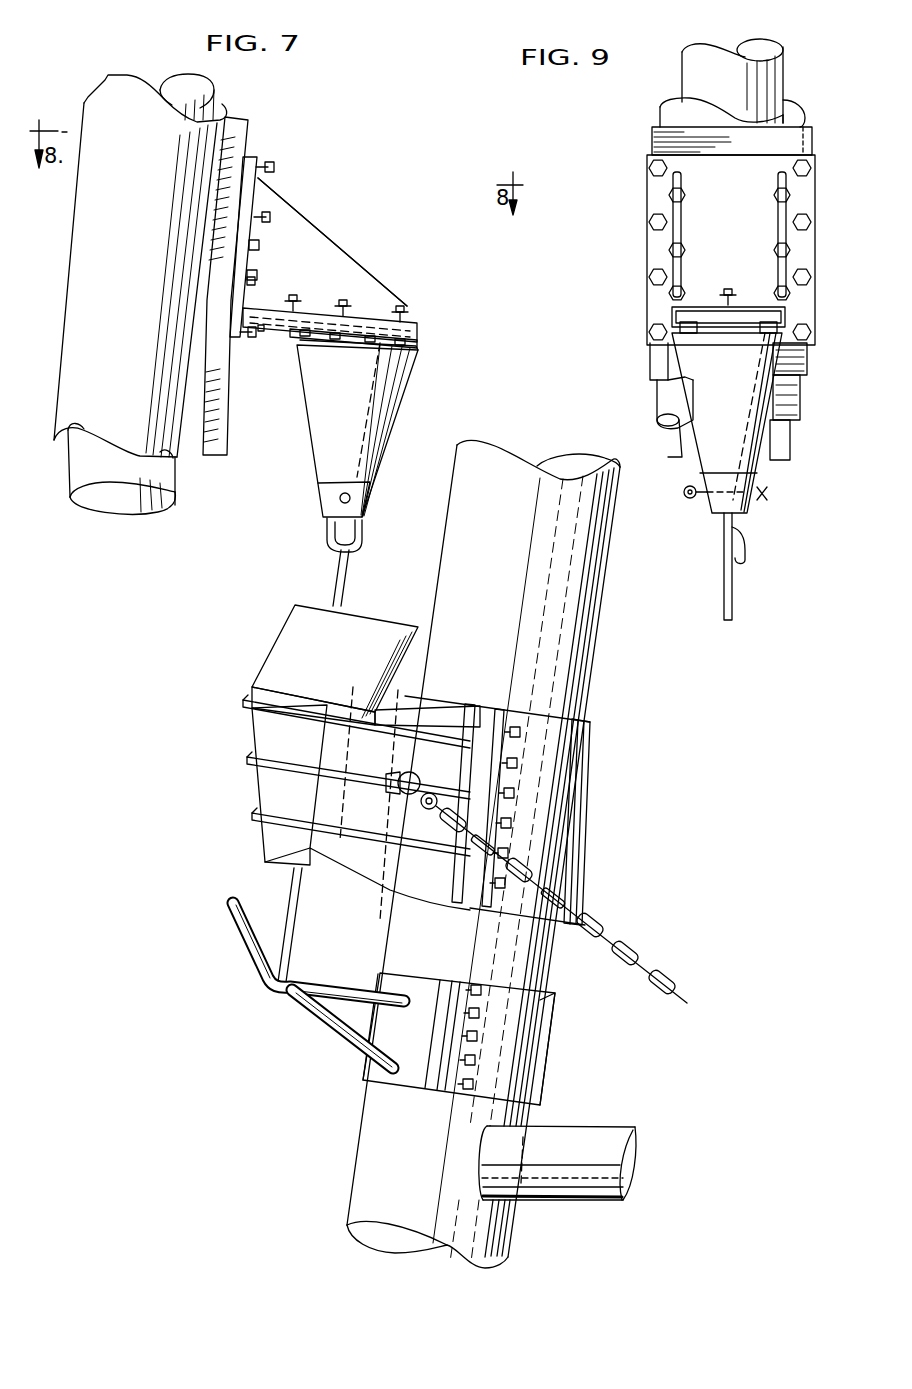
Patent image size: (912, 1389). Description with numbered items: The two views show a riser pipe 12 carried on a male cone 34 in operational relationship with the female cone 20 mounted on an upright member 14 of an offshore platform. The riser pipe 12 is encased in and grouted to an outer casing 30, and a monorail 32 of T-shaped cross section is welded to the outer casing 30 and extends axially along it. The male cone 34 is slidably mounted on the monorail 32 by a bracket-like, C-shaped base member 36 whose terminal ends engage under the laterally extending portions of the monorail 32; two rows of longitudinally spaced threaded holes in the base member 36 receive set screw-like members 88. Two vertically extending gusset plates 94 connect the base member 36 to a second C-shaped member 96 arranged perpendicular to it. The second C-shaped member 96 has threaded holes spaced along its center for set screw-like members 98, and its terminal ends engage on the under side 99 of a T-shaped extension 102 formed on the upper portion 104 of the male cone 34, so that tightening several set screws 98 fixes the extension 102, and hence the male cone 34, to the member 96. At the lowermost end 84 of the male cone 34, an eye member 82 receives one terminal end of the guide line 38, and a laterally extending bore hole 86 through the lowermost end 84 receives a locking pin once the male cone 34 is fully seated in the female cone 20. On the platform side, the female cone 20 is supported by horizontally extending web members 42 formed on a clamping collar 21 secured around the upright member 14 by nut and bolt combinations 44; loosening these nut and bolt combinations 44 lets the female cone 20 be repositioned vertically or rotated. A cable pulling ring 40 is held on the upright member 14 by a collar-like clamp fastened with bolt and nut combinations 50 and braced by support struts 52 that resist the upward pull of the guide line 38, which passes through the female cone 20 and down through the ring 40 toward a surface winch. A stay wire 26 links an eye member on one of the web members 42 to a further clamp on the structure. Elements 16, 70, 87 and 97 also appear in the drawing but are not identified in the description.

In FIG. 7, the riser pipe 12 is at (205, 88).
In FIG. 9, the riser pipe 12 is at (732, 81).
In FIG. 7, the upright member 14 is at (355, 1145).
In FIG. 7, the branch pipe 16 is at (580, 1125).
In FIG. 7, the female cone 20 is at (262, 790).
In FIG. 7, the clamping collar 21 is at (592, 725).
In FIG. 7, the stay wire 26 is at (632, 950).
In FIG. 7, the outer casing 30 is at (140, 266).
In FIG. 9, the outer casing 30 is at (673, 105).
In FIG. 7, the monorail 32 is at (253, 123).
In FIG. 9, the monorail 32 is at (652, 140).
In FIG. 7, the male cone member 34 is at (392, 410).
In FIG. 9, the male cone member 34 is at (727, 476).
In FIG. 7, the base member 36 is at (255, 160).
In FIG. 7, the guide line 38 is at (299, 933).
In FIG. 7, the cable pulling ring 40 is at (345, 990).
In FIG. 7, the web members 42 is at (240, 705).
In FIG. 7, the nut and bolt combinations 44 is at (514, 725).
In FIG. 7, the bolt and nut combinations 50 is at (480, 988).
In FIG. 7, the support struts 52 is at (345, 1040).
In FIG. 7, the lid 70 is at (280, 640).
In FIG. 7, the eye member 82 is at (364, 536).
In FIG. 7, the lowermost end 84 is at (318, 498).
In FIG. 7, the bore hole 86 is at (345, 493).
In FIG. 9, the eye bolt 87 is at (684, 495).
In FIG. 7, the set screw-like members 88 is at (275, 167).
In FIG. 9, the set screw-like members 88 is at (649, 168).
In FIG. 7, the gusset plates 94 is at (320, 240).
In FIG. 7, the second C-shaped member 96 is at (418, 318).
In FIG. 7, the nuts 97 is at (250, 280).
In FIG. 9, the nuts 97 is at (686, 195).
In FIG. 7, the set screw-like members 98 is at (296, 298).
In FIG. 9, the set screw-like members 98 is at (729, 291).
In FIG. 9, the under side 99 is at (668, 200).
In FIG. 9, the T-shaped extension 102 is at (660, 328).
In FIG. 7, the upper portion 104 is at (420, 350).
In FIG. 9, the upper portion 104 is at (660, 360).